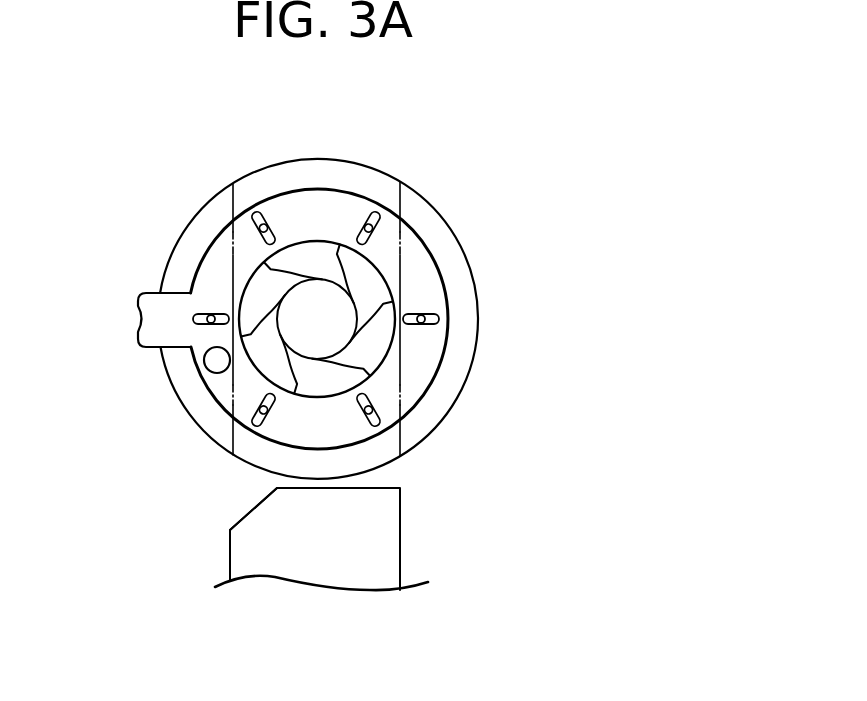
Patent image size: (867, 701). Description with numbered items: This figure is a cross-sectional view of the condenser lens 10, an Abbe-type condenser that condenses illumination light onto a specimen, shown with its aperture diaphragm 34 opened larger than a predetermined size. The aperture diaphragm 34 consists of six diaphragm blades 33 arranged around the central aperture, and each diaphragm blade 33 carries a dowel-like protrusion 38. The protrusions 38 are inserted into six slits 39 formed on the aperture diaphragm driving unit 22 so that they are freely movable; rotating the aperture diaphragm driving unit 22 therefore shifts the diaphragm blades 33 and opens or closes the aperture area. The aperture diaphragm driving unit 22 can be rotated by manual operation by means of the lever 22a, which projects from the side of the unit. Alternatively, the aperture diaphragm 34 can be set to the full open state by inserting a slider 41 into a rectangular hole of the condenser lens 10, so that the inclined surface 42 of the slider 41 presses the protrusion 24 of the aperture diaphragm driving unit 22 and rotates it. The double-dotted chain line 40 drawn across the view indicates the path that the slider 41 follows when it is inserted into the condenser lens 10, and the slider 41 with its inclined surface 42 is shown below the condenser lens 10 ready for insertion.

The condenser lens 10 is at (462, 350).
The aperture diaphragm driving unit 22 is at (435, 296).
The lever 22a is at (138, 318).
The protrusion 24 is at (212, 358).
The diaphragm blade 33 is at (370, 286).
The aperture diaphragm 34 is at (318, 296).
The protrusion 38 is at (377, 413).
The slit 39 is at (397, 404).
The double-dotted chain line 40 is at (228, 412).
The slider 41 is at (390, 538).
The inclined surface 42 is at (243, 503).